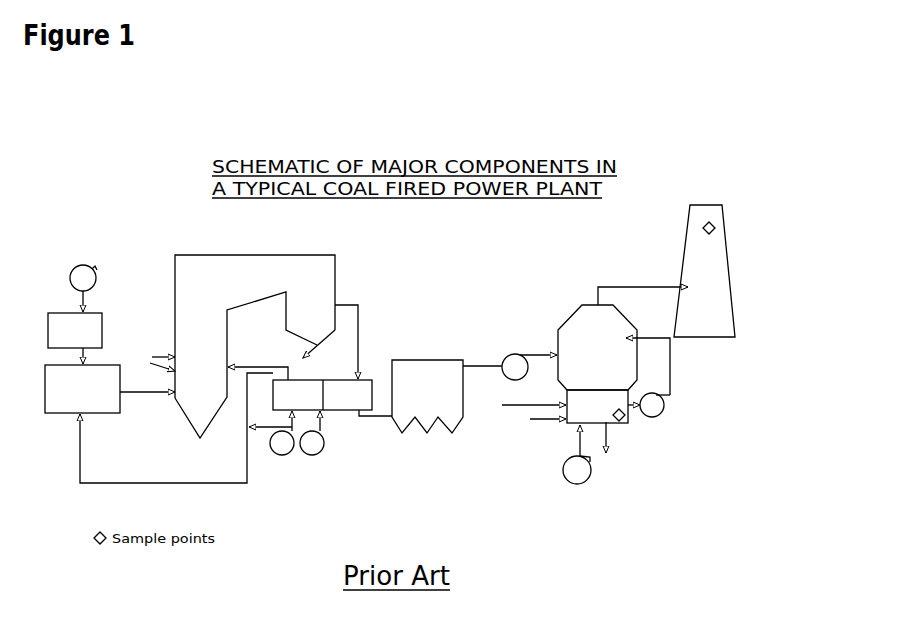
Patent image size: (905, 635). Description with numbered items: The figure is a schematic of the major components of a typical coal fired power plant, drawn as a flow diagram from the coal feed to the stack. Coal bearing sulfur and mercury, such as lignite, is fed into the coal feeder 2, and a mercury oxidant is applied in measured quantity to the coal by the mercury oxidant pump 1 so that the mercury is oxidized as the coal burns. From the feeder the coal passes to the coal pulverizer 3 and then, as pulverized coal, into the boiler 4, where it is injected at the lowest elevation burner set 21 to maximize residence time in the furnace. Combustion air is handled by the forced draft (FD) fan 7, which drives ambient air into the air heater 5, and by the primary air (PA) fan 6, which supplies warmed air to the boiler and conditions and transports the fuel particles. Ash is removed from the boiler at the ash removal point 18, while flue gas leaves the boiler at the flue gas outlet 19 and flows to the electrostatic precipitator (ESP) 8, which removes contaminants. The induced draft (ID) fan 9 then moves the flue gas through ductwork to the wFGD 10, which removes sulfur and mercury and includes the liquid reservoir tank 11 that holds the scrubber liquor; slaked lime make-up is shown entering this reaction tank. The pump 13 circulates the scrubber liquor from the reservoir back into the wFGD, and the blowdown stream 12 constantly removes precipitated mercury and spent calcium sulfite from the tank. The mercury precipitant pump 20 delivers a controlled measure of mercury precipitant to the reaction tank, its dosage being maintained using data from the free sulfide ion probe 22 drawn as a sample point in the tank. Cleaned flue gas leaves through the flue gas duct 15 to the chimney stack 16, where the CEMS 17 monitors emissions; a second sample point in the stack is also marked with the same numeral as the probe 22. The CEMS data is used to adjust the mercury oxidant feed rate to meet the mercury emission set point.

The mercury oxidant pump 1 is at (66, 273).
The coal feeder 2 is at (57, 338).
The coal pulverizer 3 is at (142, 424).
The boiler 4 is at (255, 346).
The air heater 5 is at (332, 402).
The primary air (PA) fan 6 is at (271, 449).
The forced draft (FD) fan 7 is at (318, 447).
The electrostatic precipitator (ESP) 8 is at (411, 396).
The induced draft (ID) fan 9 is at (510, 350).
The wFGD 10 is at (614, 350).
The liquid reservoir tank 11 is at (566, 423).
The blowdown stream 12 is at (606, 435).
The pump 13 is at (664, 405).
The flue gas duct 15 is at (650, 287).
The chimney stack 16 is at (723, 311).
The CEMS 17 is at (767, 257).
The ash removal point 18 is at (285, 364).
The flue gas outlet 19 is at (358, 323).
The mercury precipitant pump 20 is at (539, 475).
The lowest elevation burner set 21 is at (140, 343).
The free sulfide ion probe 22 is at (709, 222).